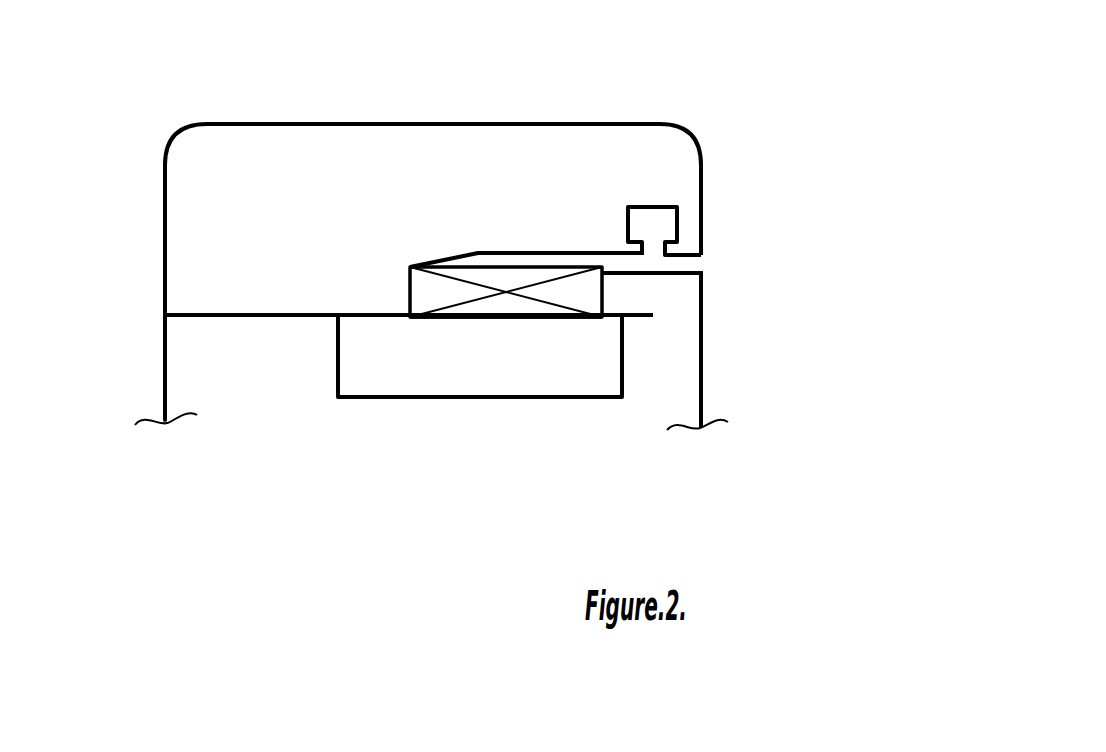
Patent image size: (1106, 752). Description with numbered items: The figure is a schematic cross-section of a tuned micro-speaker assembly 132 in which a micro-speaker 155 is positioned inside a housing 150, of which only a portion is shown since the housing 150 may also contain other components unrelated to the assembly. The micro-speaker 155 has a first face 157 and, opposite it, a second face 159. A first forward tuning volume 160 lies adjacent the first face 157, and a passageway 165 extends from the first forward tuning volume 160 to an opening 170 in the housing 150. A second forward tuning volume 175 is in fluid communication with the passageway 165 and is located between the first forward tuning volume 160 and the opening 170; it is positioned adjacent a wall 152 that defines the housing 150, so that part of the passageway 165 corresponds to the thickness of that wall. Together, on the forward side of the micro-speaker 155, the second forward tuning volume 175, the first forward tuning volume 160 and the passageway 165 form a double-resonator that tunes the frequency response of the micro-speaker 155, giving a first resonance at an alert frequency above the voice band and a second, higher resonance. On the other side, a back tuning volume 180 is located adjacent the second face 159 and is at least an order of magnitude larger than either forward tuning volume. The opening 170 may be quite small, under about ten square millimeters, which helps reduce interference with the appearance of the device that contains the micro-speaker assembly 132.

The micro-speaker assembly 132 is at (949, 60).
The housing 150 is at (648, 124).
The wall 152 is at (689, 130).
The micro-speaker 155 is at (433, 292).
The first face 157 is at (514, 266).
The second face 159 is at (527, 319).
The first forward tuning volume 160 is at (478, 269).
The passageway 165 is at (653, 265).
The opening 170 is at (710, 269).
The second forward tuning volume 175 is at (658, 229).
The back tuning volume 180 is at (470, 368).